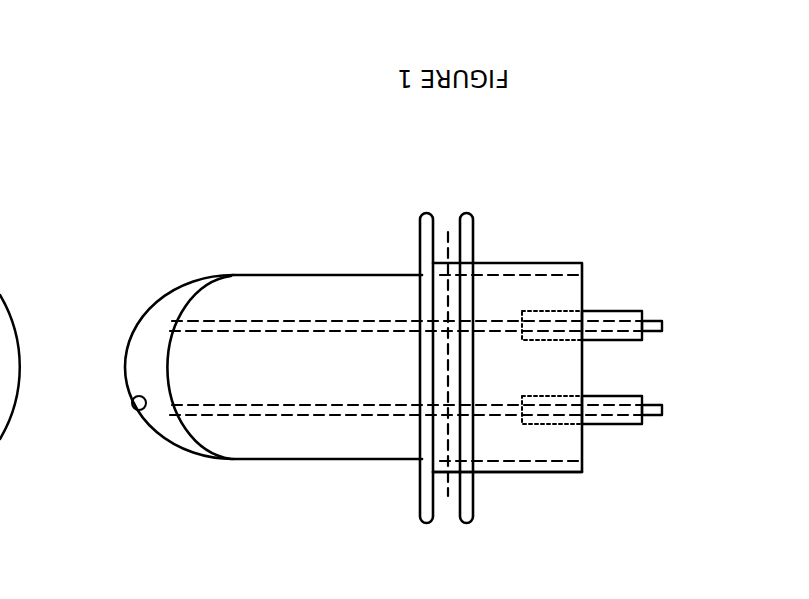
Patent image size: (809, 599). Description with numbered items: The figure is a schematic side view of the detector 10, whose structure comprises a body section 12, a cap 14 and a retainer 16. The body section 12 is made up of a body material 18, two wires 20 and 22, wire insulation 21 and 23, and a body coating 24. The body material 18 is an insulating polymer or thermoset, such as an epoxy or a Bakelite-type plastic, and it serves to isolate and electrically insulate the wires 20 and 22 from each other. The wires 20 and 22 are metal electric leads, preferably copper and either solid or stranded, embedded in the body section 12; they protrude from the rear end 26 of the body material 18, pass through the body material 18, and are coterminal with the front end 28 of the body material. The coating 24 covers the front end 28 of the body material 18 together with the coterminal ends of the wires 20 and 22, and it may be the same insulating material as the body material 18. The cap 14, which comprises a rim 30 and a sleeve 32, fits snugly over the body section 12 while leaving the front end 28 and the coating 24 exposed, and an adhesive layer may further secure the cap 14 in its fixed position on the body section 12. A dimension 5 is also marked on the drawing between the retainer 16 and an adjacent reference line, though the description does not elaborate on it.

The detector 10 is at (174, 475).
The body section 12 is at (120, 382).
The cap 14 is at (414, 474).
The retainer 16 is at (477, 220).
The body material 18 is at (208, 350).
The wire 20 is at (656, 416).
The wire insulation 21 is at (615, 425).
The wire 22 is at (662, 321).
The wire insulation 23 is at (622, 311).
The body coating 24 is at (151, 436).
The rear end 26 is at (583, 372).
The front end 28 is at (137, 409).
The rim 30 is at (427, 502).
The sleeve 32 is at (565, 473).
The spacing dimension 5 is at (448, 233).